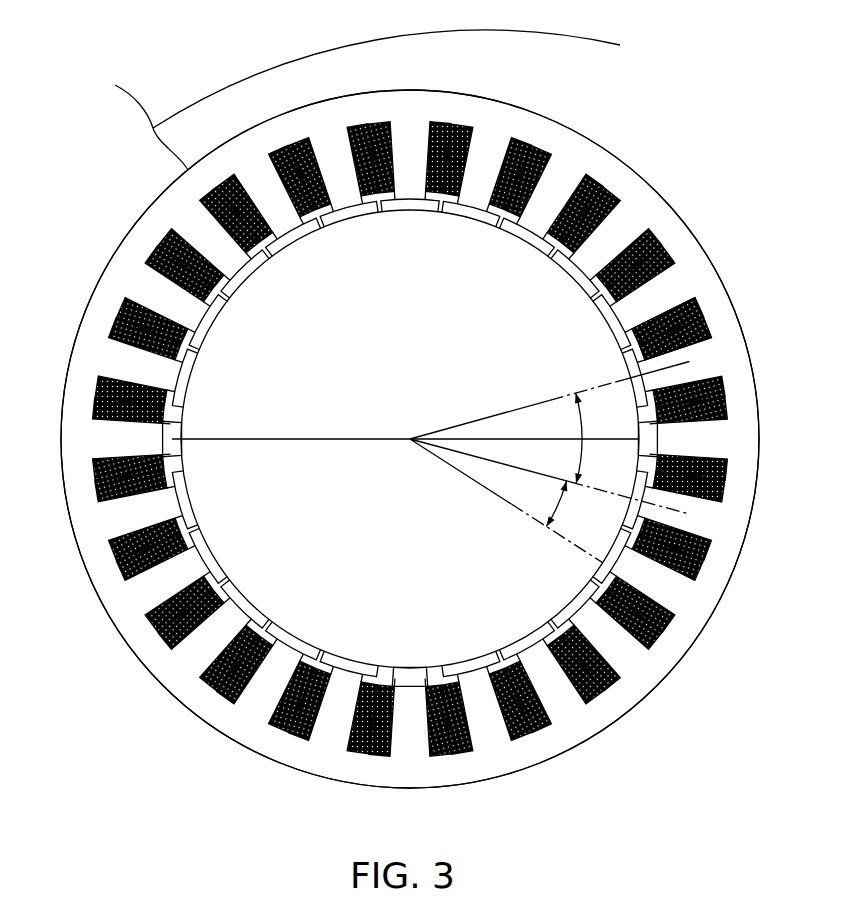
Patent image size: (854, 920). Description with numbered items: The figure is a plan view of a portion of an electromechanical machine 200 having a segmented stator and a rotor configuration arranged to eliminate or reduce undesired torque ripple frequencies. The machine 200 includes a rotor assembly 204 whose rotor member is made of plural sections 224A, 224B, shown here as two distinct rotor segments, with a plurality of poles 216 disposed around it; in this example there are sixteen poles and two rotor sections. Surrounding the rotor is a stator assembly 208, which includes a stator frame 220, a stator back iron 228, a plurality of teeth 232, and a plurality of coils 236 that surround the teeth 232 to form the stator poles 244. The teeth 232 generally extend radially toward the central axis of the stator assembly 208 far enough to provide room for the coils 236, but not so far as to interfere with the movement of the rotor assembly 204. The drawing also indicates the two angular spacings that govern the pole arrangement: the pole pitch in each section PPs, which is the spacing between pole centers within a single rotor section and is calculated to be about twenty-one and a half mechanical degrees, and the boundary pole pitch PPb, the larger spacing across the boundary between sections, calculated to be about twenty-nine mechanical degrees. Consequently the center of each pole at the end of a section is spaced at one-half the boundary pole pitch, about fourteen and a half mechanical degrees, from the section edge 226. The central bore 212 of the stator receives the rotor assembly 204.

The machine 200 is at (509, 37).
The rotor assembly 204 is at (205, 503).
The stator assembly 208 is at (657, 191).
The stator bore / rotor cavity 212 is at (370, 411).
The poles 216 is at (553, 245).
The stator frame 220 is at (298, 103).
The first rotor section 224A is at (235, 570).
The second rotor section 224B is at (290, 280).
The section edge 226 is at (170, 440).
The stator back iron 228 is at (578, 152).
The teeth 232 is at (640, 303).
The coils 236 is at (700, 312).
The stator poles 244 is at (377, 193).
The boundary pole pitch PPb is at (606, 438).
The pole pitch in each section PPs is at (573, 507).